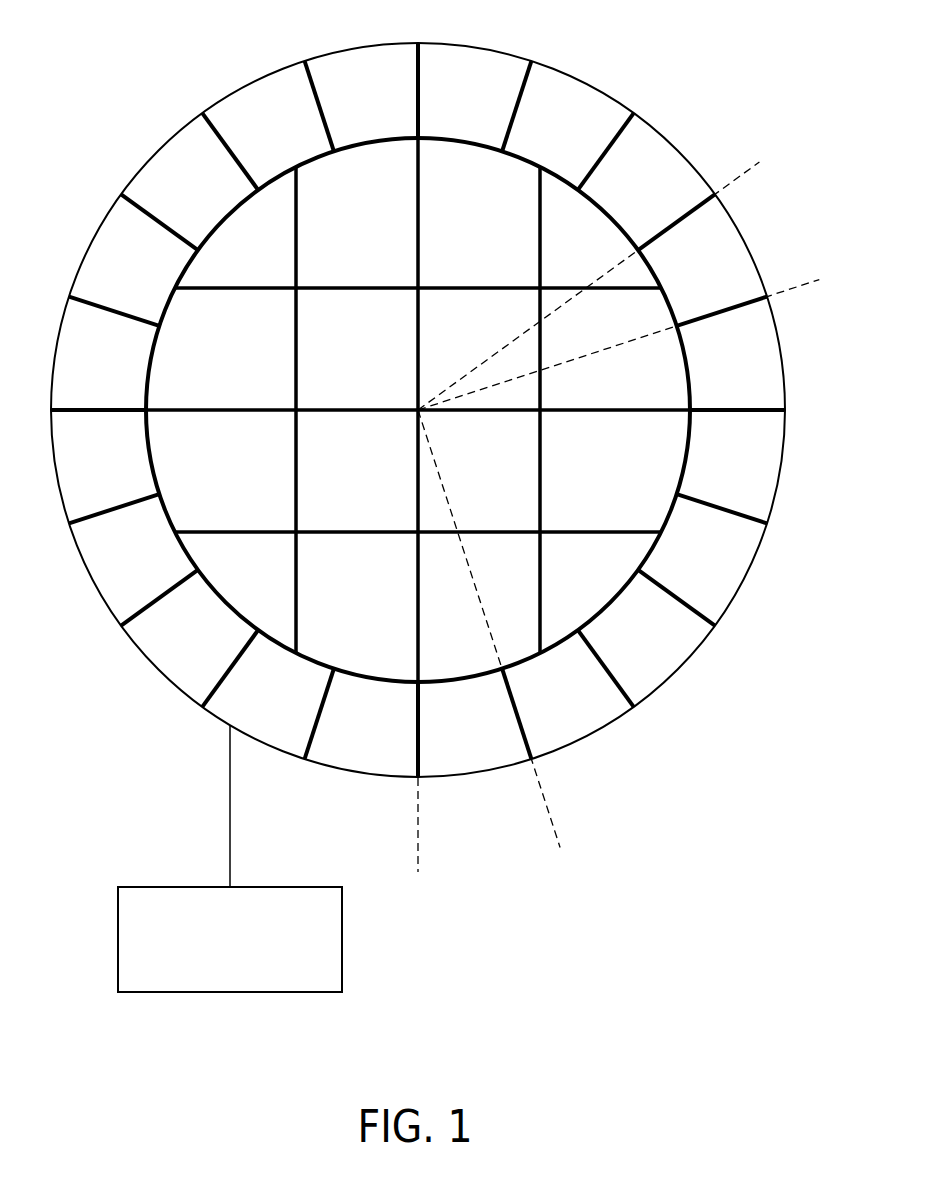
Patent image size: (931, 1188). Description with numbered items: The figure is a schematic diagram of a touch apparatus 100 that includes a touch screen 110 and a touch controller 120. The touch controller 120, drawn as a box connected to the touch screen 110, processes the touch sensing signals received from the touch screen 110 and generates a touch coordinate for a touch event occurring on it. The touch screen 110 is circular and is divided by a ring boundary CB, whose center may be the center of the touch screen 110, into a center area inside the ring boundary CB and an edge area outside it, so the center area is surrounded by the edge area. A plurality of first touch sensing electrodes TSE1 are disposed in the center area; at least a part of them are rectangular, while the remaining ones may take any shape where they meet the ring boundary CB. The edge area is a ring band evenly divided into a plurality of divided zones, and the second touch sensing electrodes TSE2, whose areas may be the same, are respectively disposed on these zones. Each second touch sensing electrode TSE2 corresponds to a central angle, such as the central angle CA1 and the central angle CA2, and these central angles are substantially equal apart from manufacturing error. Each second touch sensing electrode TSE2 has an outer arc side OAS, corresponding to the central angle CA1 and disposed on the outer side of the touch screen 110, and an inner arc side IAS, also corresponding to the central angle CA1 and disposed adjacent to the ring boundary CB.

The touch apparatus 100 is at (435, 512).
The touch screen 110 is at (435, 453).
The touch controller 120 is at (343, 940).
The first touch sensing electrodes TSE1 is at (418, 410).
The second touch sensing electrodes TSE2 is at (418, 410).
The inner arc side IAS is at (437, 447).
The outer arc side OAS is at (455, 774).
The ring boundary CB is at (598, 198).
The central angle CA1 is at (418, 865).
The central angle CA2 is at (759, 164).